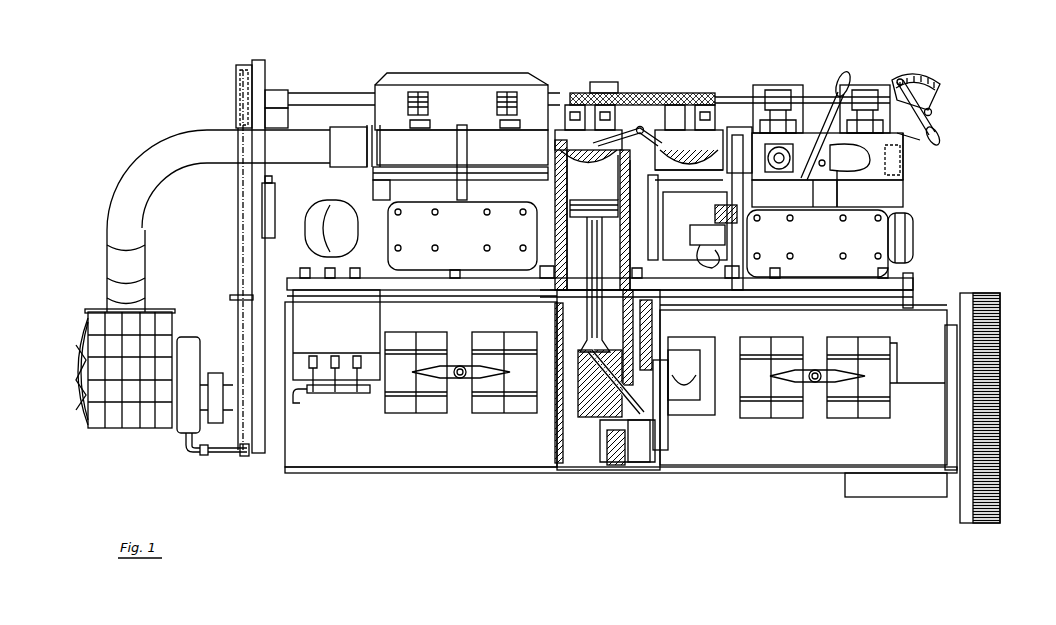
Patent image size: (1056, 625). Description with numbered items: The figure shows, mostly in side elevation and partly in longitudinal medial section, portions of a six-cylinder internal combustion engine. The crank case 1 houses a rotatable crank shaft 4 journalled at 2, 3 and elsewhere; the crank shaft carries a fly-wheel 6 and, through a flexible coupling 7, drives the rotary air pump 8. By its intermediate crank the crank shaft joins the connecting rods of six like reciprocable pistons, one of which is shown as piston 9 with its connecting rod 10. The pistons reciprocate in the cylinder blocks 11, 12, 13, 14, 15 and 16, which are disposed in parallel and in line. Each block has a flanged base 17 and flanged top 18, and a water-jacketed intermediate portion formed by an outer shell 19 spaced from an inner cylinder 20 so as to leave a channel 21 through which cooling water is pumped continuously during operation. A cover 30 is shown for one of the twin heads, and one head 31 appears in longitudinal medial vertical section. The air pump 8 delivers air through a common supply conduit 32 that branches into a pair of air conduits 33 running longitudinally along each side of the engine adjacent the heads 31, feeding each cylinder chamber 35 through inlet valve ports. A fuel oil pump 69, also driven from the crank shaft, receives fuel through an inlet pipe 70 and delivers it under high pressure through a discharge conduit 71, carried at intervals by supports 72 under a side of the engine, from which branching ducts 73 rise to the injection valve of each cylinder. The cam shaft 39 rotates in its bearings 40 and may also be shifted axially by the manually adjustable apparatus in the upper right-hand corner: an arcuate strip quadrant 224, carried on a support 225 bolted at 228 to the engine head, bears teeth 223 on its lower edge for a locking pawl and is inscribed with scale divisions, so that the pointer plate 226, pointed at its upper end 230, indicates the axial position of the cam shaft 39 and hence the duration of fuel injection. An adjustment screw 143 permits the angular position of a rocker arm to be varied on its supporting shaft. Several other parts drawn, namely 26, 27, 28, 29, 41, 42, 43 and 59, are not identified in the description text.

The crank case 1 is at (788, 446).
The crank shaft journal 2 is at (658, 360).
The crank shaft journal 3 is at (553, 470).
The crank shaft 4 is at (608, 412).
The fly-wheel 6 is at (1000, 400).
The flexible coupling 7 is at (219, 373).
The air pump 8 is at (150, 428).
The piston 9 is at (572, 233).
The connecting rod 10 is at (603, 262).
The cylinder block 11 is at (408, 190).
The cylinder block 12 is at (482, 190).
The cylinder block 13 is at (670, 180).
The cylinder block 14 is at (693, 188).
The cylinder block 15 is at (775, 192).
The cylinder block 16 is at (855, 193).
The flanged base 17 is at (603, 83).
The flanged top 18 is at (903, 183).
The outer shell 19 is at (620, 208).
The inner cylinder 20 is at (630, 228).
The channel 21 is at (630, 243).
The tank 26 is at (320, 232).
The rail 27 is at (725, 296).
The cover 28 is at (745, 265).
The bracket 29 is at (663, 315).
The cover 30 is at (462, 88).
The cylinder head 31 is at (605, 138).
The common supply conduit 32 is at (143, 300).
The air conduit 33 is at (218, 162).
The cylinder chamber 35 is at (548, 153).
The cam shaft 39 is at (730, 100).
The bearing 40 is at (660, 90).
The frame post 41 is at (235, 270).
The bracket 42 is at (236, 103).
The pipe 43 is at (235, 458).
The elbow fitting 59 is at (203, 458).
The fuel oil pump 69 is at (336, 314).
The inlet pipe 70 is at (300, 405).
The discharge conduit 71 is at (380, 283).
The support 72 is at (913, 295).
The branching duct 73 is at (665, 177).
The adjustment screw 143 is at (930, 140).
The teeth 223 is at (938, 84).
The arcuate strip quadrant 224 is at (915, 75).
The support 225 is at (936, 110).
The pointer plate 226 is at (935, 92).
The bolt 228 is at (932, 113).
The upper end 230 is at (892, 78).